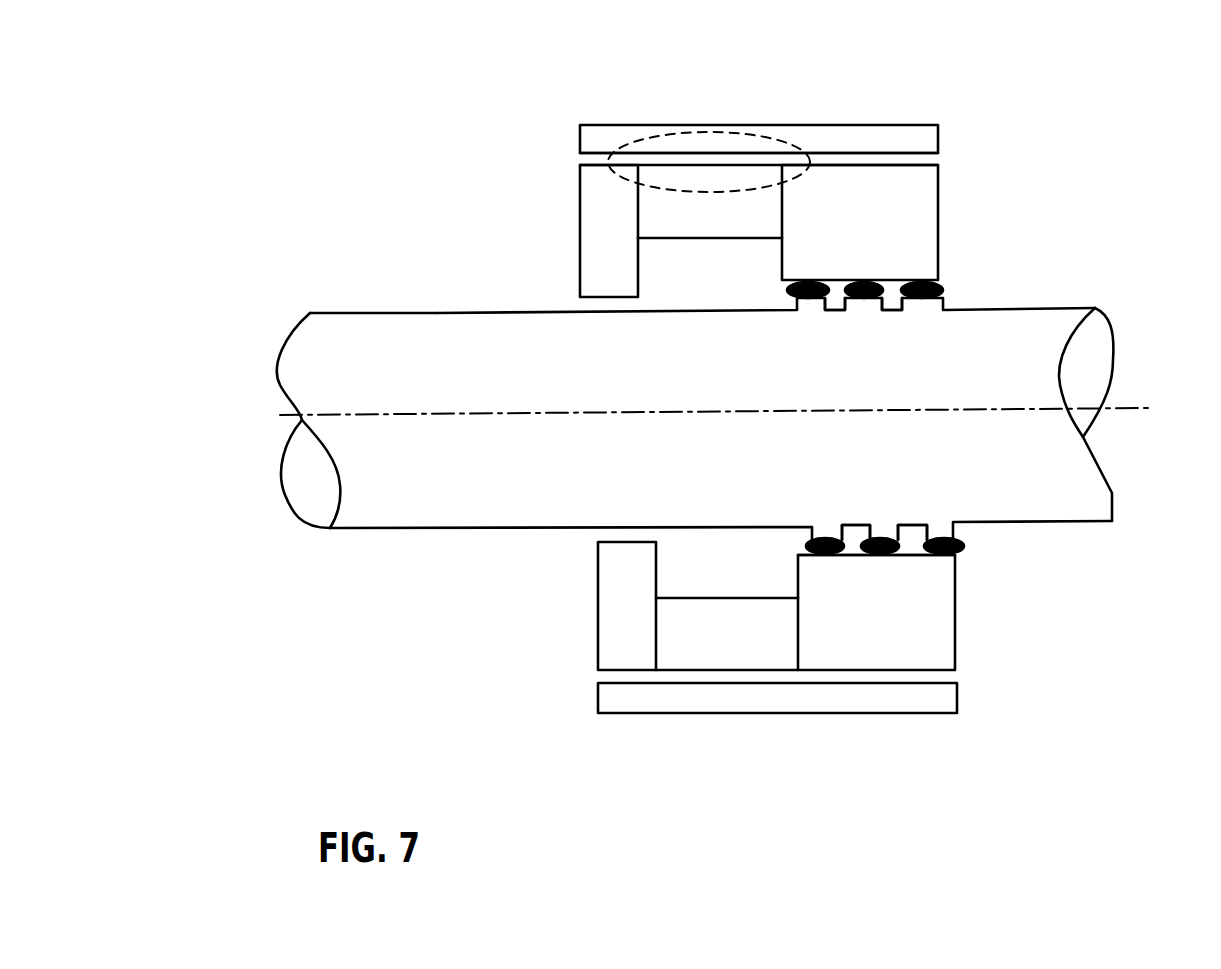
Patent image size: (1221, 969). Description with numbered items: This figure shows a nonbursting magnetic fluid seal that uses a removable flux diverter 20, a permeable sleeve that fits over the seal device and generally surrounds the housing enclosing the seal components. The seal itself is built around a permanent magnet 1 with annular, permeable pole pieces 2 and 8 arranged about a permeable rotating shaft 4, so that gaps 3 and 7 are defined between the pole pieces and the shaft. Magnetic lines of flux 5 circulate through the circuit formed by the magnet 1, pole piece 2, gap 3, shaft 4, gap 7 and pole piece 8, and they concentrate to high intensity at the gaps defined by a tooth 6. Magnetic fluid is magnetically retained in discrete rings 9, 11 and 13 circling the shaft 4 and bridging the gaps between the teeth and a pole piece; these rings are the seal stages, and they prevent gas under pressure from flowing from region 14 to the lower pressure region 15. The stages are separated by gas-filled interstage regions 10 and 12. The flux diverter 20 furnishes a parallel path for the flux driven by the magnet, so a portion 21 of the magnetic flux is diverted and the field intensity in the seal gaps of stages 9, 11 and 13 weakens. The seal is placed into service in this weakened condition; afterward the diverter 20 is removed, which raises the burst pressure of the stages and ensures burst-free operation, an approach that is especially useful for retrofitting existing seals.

The permanent magnet 1 is at (707, 167).
The pole piece 2 is at (580, 210).
The gap 3 is at (838, 300).
The rotating shaft 4 is at (437, 313).
The magnetic lines of flux 5 is at (695, 182).
The tooth 6 is at (940, 302).
The gap 7 is at (895, 302).
The pole piece 8 is at (870, 163).
The magnetic fluid ring 9 is at (963, 546).
The interstage region 10 is at (915, 527).
The magnetic fluid ring 11 is at (887, 555).
The interstage region 12 is at (862, 527).
The magnetic fluid ring 13 is at (833, 555).
The region 14 is at (705, 627).
The lower pressure region 15 is at (987, 222).
The flux diverter 20 is at (808, 125).
The diverted portion of magnetic flux 21 is at (693, 133).